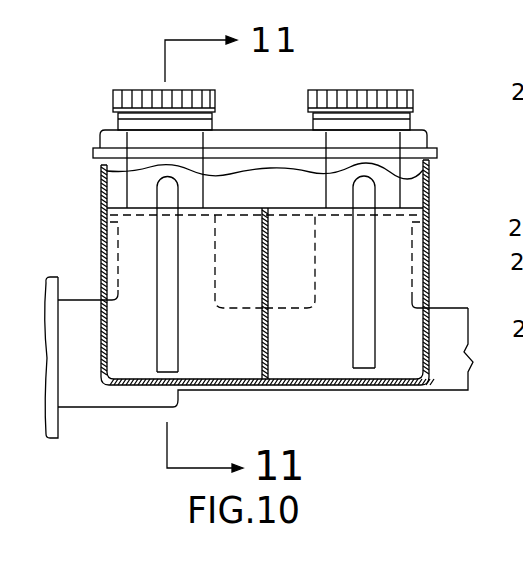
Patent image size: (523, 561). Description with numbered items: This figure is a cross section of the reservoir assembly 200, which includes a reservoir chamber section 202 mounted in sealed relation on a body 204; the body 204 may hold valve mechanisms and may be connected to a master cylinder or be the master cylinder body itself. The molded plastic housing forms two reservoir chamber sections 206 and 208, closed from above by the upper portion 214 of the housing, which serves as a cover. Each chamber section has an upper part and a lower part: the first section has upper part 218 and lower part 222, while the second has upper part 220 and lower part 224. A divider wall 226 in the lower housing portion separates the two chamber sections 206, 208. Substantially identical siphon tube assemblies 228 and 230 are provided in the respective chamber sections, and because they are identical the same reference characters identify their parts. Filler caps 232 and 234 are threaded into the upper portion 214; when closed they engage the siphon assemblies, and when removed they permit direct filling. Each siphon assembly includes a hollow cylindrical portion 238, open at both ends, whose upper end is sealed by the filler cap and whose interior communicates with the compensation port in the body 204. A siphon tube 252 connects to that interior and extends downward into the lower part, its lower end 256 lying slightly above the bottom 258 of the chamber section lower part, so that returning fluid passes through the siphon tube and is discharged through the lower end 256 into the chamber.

The reservoir assembly 200 is at (93, 180).
The reservoir chamber section 202 is at (107, 115).
The body 204 is at (441, 386).
The reservoir chamber section 206 is at (132, 284).
The reservoir chamber section 208 is at (418, 297).
The upper portion of housing 214 is at (280, 133).
The upper part of chamber section 218 is at (100, 147).
The upper part of chamber section 220 is at (408, 197).
The lower part of chamber section 222 is at (225, 380).
The lower part of chamber section 224 is at (288, 368).
The divider wall 226 is at (258, 390).
The siphon tube assembly 228 is at (132, 228).
The siphon tube assembly 230 is at (381, 242).
The filler cap 232 is at (142, 90).
The filler cap 234 is at (346, 90).
The hollow cylindrical portion 238 is at (193, 183).
The siphon tube 252 is at (167, 275).
The lower end of siphon tube 256 is at (178, 373).
The bottom of chamber section lower part 258 is at (383, 388).